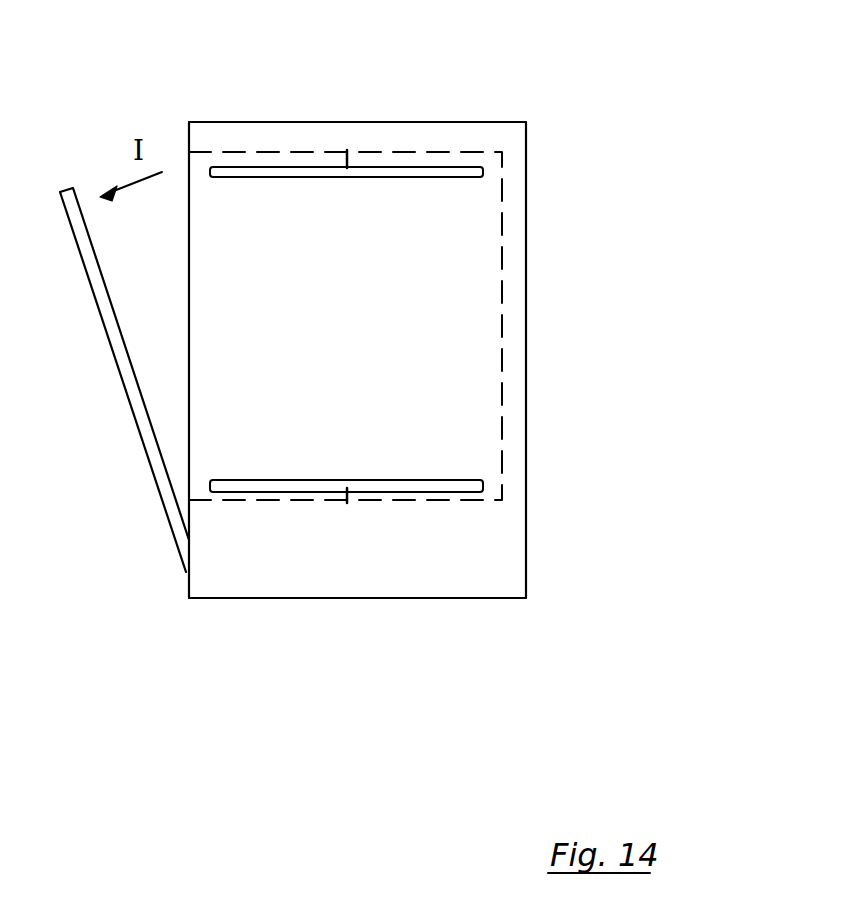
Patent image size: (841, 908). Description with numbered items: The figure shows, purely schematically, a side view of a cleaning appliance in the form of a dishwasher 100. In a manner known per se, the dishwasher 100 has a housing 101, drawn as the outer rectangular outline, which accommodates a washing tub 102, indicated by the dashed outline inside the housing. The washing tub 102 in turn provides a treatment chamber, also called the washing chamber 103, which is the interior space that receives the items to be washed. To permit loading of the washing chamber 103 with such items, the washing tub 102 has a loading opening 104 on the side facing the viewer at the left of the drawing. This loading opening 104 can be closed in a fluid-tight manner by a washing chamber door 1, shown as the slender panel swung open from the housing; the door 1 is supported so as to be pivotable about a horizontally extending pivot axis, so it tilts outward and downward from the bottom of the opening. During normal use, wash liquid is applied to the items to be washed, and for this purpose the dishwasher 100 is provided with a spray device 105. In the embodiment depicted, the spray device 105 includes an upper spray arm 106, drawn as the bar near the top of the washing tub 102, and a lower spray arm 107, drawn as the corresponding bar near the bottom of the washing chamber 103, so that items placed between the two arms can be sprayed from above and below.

The washing chamber door 1 is at (120, 350).
The dishwasher 100 is at (553, 165).
The housing 101 is at (292, 598).
The washing tub 102 is at (395, 502).
The washing chamber 103 is at (363, 291).
The loading opening 104 is at (188, 312).
The spray device 105 is at (433, 177).
The upper spray arm 106 is at (283, 168).
The lower spray arm 107 is at (262, 480).